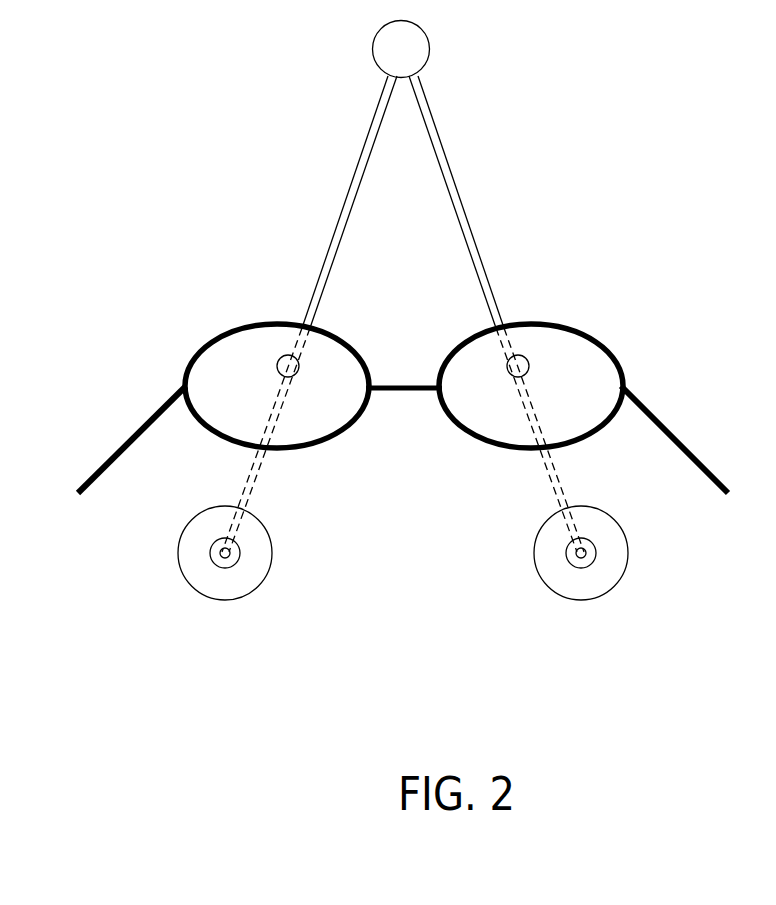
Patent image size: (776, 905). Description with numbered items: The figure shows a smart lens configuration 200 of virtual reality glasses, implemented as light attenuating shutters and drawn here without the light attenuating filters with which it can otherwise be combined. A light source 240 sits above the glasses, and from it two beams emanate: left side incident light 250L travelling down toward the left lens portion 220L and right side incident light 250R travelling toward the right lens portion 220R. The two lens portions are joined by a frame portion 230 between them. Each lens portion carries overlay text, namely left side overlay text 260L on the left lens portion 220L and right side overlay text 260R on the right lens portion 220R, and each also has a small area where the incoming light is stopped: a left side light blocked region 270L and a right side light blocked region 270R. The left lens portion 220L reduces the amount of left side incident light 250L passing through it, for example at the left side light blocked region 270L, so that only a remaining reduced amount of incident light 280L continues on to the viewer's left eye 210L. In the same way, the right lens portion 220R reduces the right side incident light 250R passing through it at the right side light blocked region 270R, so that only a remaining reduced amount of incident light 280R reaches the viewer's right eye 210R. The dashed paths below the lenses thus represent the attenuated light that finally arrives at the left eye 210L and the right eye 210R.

The smart lens configuration 200 is at (114, 52).
The light source 240 is at (401, 49).
The left side incident light 250L is at (352, 152).
The right side incident light 250R is at (454, 151).
The left lens portion 220L is at (217, 380).
The right lens portion 220R is at (590, 378).
The frame portion 230 is at (384, 383).
The left side overlay text 260L is at (262, 360).
The right side overlay text 260R is at (494, 361).
The left side light blocked region 270L is at (281, 352).
The right side light blocked region 270R is at (533, 357).
The remaining reduced amount of incident light 280L is at (243, 473).
The remaining reduced amount of incident light 280R is at (560, 472).
The left eye 210L is at (180, 532).
The right eye 210R is at (627, 537).